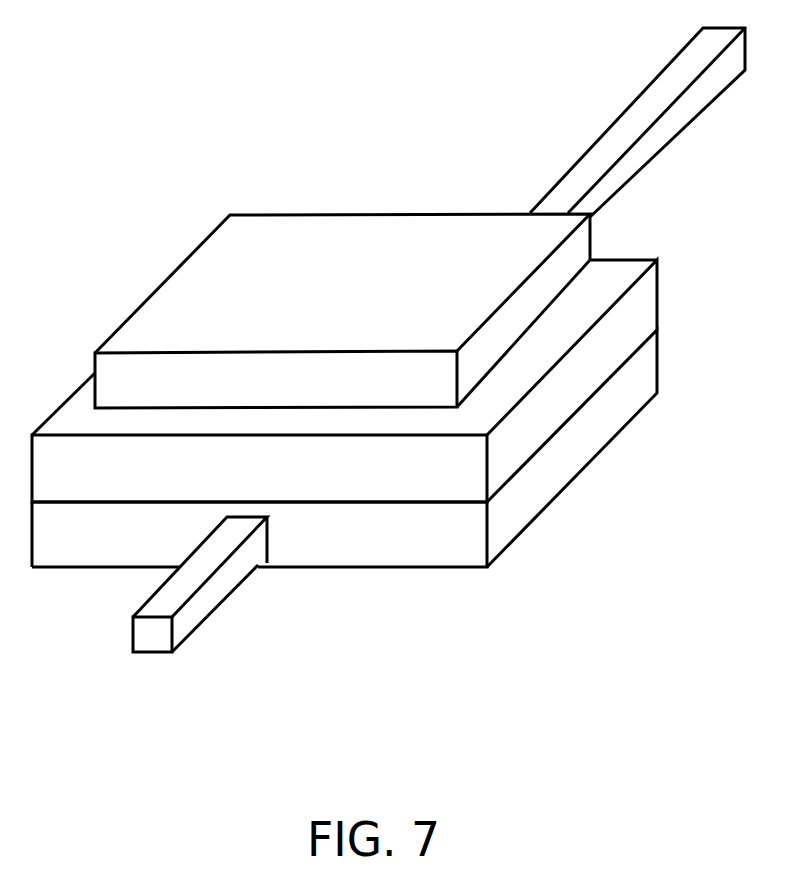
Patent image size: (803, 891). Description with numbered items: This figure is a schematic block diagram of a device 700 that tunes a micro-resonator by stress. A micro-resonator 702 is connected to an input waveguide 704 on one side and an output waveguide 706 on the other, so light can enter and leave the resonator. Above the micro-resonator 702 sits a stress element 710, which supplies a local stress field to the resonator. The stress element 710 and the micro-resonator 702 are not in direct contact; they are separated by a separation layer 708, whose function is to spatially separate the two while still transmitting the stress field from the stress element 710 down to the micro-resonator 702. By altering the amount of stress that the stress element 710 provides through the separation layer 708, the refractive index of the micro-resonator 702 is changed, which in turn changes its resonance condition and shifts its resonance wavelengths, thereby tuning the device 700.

The device 700 is at (302, 80).
The micro-resonator 702 is at (454, 520).
The input waveguide 704 is at (148, 633).
The output waveguide 706 is at (680, 63).
The separation layer 708 is at (647, 303).
The stress element 710 is at (584, 241).